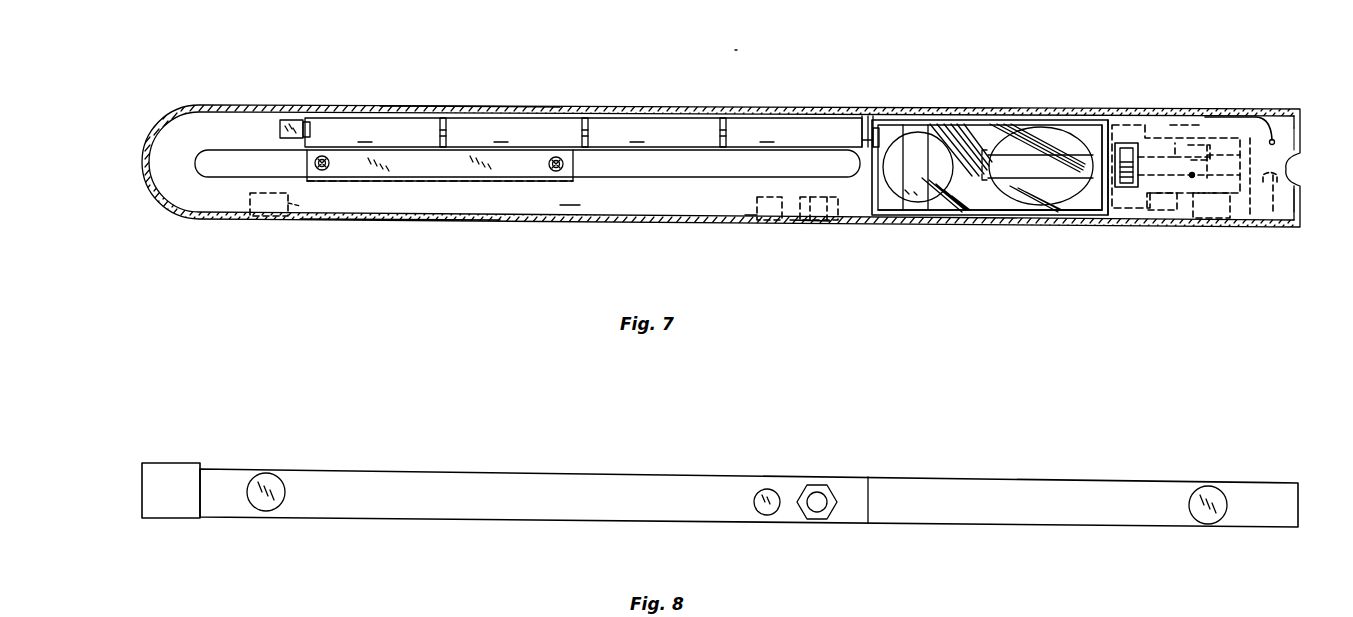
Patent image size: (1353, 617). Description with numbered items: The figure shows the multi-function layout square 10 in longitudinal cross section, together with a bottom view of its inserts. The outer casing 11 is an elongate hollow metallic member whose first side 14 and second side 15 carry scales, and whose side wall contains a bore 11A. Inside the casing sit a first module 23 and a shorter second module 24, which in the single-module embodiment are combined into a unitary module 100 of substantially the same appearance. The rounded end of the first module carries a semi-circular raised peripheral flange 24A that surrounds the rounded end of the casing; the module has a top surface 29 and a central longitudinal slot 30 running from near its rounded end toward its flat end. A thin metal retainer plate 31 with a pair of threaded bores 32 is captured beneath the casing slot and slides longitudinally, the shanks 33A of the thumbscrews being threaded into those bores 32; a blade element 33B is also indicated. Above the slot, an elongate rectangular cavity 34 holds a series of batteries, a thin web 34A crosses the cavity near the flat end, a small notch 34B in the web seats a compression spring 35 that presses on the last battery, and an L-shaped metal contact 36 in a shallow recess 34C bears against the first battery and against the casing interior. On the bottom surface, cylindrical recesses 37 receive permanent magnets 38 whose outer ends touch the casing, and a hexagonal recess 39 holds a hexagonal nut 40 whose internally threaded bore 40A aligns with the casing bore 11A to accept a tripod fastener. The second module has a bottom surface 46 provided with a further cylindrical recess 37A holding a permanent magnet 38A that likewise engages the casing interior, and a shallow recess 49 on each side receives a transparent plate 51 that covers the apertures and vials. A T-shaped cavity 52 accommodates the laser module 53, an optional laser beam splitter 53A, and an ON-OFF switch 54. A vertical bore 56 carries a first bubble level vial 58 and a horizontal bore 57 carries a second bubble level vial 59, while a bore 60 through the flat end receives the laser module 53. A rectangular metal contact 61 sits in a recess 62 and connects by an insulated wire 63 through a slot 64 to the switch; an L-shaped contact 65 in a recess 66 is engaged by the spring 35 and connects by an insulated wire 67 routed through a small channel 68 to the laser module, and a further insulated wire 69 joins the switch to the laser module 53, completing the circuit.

In FIG. 7, the multi-function layout square 10 is at (736, 46).
In FIG. 7, the outer housing or casing 11 is at (224, 100).
In FIG. 7, the bore in side wall of casing 11A is at (812, 225).
In FIG. 7, the first side 14 is at (395, 226).
In FIG. 7, the second side 15 is at (466, 108).
In FIG. 7, the first module 23 is at (572, 212).
In FIG. 8, the first module 23 is at (452, 466).
In FIG. 7, the second module 24 is at (1114, 212).
In FIG. 8, the second module 24 is at (145, 464).
In FIG. 8, the semi-circular raised peripheral flange 24A is at (200, 465).
In FIG. 8, the top surface 29 is at (408, 502).
In FIG. 7, the central longitudinal slot 30 is at (622, 166).
In FIG. 7, the retainer plate 31 is at (438, 183).
In FIG. 7, the threaded bores 32 is at (439, 187).
In FIG. 7, the shanks of thumbscrews 33A is at (325, 171).
In FIG. 8, the blade 33B is at (759, 609).
In FIG. 7, the elongate rectangular cavity 34 is at (400, 116).
In FIG. 7, the thin web 34A is at (849, 100).
In FIG. 7, the small notch 34B is at (849, 100).
In FIG. 7, the shallow rectangular recess 34C is at (290, 118).
In FIG. 7, the small compression spring 35 is at (862, 130).
In FIG. 7, the L-shaped metal contact 36 is at (318, 93).
In FIG. 7, the cylindrical recesses 37 is at (292, 203).
In FIG. 8, the cylindrical recesses 37 is at (517, 462).
In FIG. 7, the cylindrical recess 37A is at (1194, 265).
In FIG. 8, the cylindrical recess 37A is at (1194, 484).
In FIG. 7, the cylindrical permanent magnets 38 is at (252, 212).
In FIG. 8, the cylindrical permanent magnets 38 is at (283, 478).
In FIG. 7, the cylindrical permanent magnet 38A is at (1210, 222).
In FIG. 8, the cylindrical permanent magnet 38A is at (1212, 492).
In FIG. 7, the hexagonal recess 39 is at (847, 242).
In FIG. 8, the hexagonal recess 39 is at (865, 467).
In FIG. 7, the hexagonal nut 40 is at (842, 222).
In FIG. 8, the hexagonal nut 40 is at (865, 467).
In FIG. 8, the internally threaded bore 40A is at (818, 490).
In FIG. 8, the bottom surface 46 is at (1020, 516).
In FIG. 7, the shallow rectangular recess 49 is at (1040, 216).
In FIG. 7, the transparent plate 51 is at (988, 212).
In FIG. 7, the T-shaped cavity 52 is at (1140, 216).
In FIG. 7, the laser module 53 is at (1246, 241).
In FIG. 7, the laser beam splitter 53A is at (1240, 222).
In FIG. 7, the ON-OFF switch 54 is at (1126, 143).
In FIG. 7, the bore 56 is at (935, 216).
In FIG. 7, the bore 57 is at (1073, 108).
In FIG. 7, the first bubble level vial 58 is at (912, 150).
In FIG. 7, the second bubble level vial 59 is at (1012, 198).
In FIG. 7, the bore 60 is at (1272, 226).
In FIG. 7, the small rectangular metal contact 61 is at (1189, 120).
In FIG. 7, the shallow rectangular recess 62 is at (1166, 122).
In FIG. 7, the insulated wire 63 is at (1261, 139).
In FIG. 7, the slot 64 is at (1212, 127).
In FIG. 7, the L-shaped metal contact 65 is at (886, 114).
In FIG. 7, the shallow rectangular recess 66 is at (877, 132).
In FIG. 7, the insulated wire 67 is at (1302, 128).
In FIG. 7, the small channel 68 is at (1273, 120).
In FIG. 7, the insulated wire 69 is at (1152, 216).
In FIG. 7, the singular unitary module 100 is at (990, 70).
In FIG. 8, the singular unitary module 100 is at (612, 440).